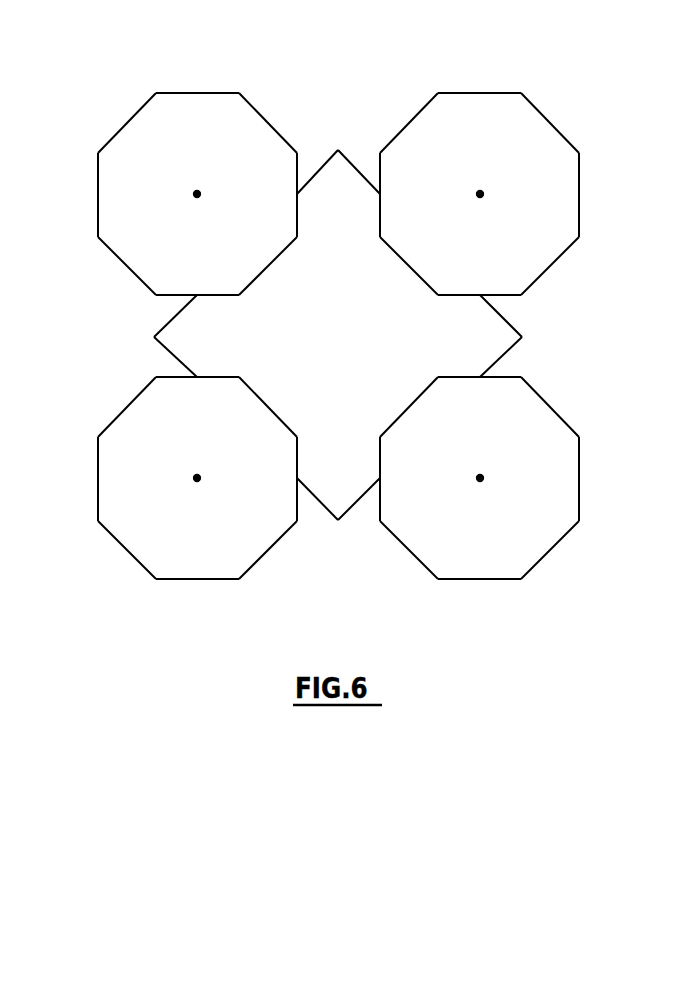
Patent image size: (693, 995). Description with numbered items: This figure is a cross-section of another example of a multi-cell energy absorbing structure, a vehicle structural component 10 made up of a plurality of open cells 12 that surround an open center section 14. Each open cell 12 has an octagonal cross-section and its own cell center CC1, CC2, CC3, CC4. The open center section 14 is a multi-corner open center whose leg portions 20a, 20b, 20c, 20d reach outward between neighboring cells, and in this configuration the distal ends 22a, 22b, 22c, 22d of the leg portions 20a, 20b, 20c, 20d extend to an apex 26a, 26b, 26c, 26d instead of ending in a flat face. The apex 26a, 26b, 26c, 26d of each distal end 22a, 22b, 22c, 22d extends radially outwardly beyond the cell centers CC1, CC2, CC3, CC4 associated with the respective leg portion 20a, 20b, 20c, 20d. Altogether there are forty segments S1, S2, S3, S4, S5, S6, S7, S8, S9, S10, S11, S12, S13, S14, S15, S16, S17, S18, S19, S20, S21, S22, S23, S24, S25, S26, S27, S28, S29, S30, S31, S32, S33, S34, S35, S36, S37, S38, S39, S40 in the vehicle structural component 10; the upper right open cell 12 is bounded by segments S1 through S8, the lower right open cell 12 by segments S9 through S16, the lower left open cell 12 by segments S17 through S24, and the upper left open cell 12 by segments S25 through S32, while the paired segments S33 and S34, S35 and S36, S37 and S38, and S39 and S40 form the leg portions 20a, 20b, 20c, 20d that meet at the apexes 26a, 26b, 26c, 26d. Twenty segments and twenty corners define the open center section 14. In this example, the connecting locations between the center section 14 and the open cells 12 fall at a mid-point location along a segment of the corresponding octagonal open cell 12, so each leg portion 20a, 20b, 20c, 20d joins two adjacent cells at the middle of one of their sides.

The vehicle structural component 10 is at (364, 330).
The open cell 12 is at (222, 125).
The open center section 14 is at (498, 337).
The leg portion 20a is at (333, 168).
The leg portion 20b is at (444, 312).
The leg portion 20c is at (351, 497).
The leg portion 20d is at (175, 330).
The distal end 22a is at (342, 170).
The distal end 22b is at (495, 350).
The distal end 22c is at (335, 513).
The distal end 22d is at (178, 354).
The apex 26a is at (331, 154).
The apex 26b is at (522, 336).
The apex 26c is at (336, 520).
The apex 26d is at (154, 337).
The cell center CC1 is at (200, 196).
The cell center CC2 is at (483, 196).
The cell center CC3 is at (483, 480).
The cell center CC4 is at (200, 480).
The segment S1 is at (479, 76).
The segment S2 is at (551, 123).
The segment S3 is at (567, 195).
The segment S4 is at (552, 266).
The segment S5 is at (479, 275).
The segment S6 is at (409, 267).
The segment S7 is at (399, 195).
The segment S8 is at (409, 120).
The segment S9 is at (479, 397).
The segment S10 is at (557, 407).
The segment S11 is at (601, 479).
The segment S12 is at (557, 550).
The segment S13 is at (479, 597).
The segment S14 is at (414, 550).
The segment S15 is at (401, 479).
The segment S16 is at (405, 407).
The segment S17 is at (197, 397).
The segment S18 is at (270, 407).
The segment S19 is at (277, 479).
The segment S20 is at (276, 550).
The segment S21 is at (197, 597).
The segment S22 is at (124, 550).
The segment S23 is at (81, 479).
The segment S24 is at (120, 407).
The segment S25 is at (197, 76).
The segment S26 is at (273, 123).
The segment S27 is at (277, 195).
The segment S28 is at (276, 266).
The segment S29 is at (197, 280).
The segment S30 is at (129, 263).
The segment S31 is at (118, 195).
The segment S32 is at (135, 123).
The segment S33 is at (488, 316).
The segment S34 is at (488, 357).
The segment S35 is at (359, 488).
The segment S36 is at (319, 488).
The segment S37 is at (194, 357).
The segment S38 is at (194, 316).
The segment S39 is at (318, 188).
The segment S40 is at (359, 188).